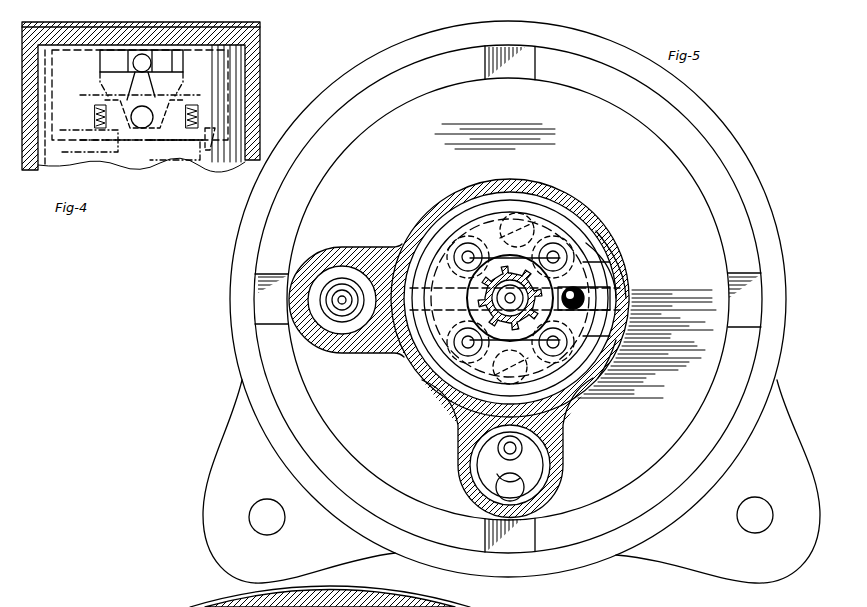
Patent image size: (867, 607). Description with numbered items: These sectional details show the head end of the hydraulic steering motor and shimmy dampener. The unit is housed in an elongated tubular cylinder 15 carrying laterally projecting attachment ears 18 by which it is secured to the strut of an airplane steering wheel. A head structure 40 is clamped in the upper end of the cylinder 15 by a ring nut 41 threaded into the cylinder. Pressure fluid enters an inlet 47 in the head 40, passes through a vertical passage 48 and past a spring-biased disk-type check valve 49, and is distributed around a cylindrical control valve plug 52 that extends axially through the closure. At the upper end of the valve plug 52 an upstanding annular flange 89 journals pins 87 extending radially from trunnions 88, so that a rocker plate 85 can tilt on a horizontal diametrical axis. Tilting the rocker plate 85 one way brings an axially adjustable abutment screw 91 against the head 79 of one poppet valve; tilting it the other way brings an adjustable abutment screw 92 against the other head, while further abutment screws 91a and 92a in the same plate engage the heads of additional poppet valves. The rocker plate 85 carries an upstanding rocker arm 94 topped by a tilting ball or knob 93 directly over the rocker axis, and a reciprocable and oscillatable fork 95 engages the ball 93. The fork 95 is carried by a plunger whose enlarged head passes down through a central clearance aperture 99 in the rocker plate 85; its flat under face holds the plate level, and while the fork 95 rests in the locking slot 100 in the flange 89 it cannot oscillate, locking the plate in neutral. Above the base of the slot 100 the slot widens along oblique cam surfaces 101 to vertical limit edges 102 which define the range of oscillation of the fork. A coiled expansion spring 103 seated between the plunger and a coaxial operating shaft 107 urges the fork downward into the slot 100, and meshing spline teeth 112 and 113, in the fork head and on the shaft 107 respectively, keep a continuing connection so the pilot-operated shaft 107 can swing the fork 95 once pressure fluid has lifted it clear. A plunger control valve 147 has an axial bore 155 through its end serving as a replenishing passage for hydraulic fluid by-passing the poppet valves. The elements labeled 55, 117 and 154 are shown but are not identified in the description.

In FIG. 5, the tubular cylinder 15 is at (247, 351).
In FIG. 5, the attachment ears 18 is at (210, 527).
In FIG. 4, the head structure 40 is at (256, 90).
In FIG. 5, the head structure 40 is at (606, 279).
In FIG. 5, the ring nut 41 is at (612, 520).
In FIG. 5, the inlet 47 is at (548, 471).
In FIG. 5, the vertical passage 48 is at (518, 494).
In FIG. 5, the check valve 49 is at (506, 491).
In FIG. 5, the control valve plug 52 is at (440, 334).
In FIG. 5, the hub ring 55 is at (470, 421).
In FIG. 4, the poppet valve heads 79 is at (200, 166).
In FIG. 5, the poppet valve heads 79 is at (580, 218).
In FIG. 4, the rocker plate 85 is at (80, 121).
In FIG. 5, the rocker plate 85 is at (444, 272).
In FIG. 4, the pins 87 is at (143, 121).
In FIG. 4, the trunnions 88 is at (160, 158).
In FIG. 5, the trunnions 88 is at (425, 241).
In FIG. 4, the annular flange 89 is at (50, 162).
In FIG. 5, the annular flange 89 is at (392, 361).
In FIG. 4, the abutment screw 91 is at (262, 110).
In FIG. 5, the abutment screw 91 is at (586, 241).
In FIG. 5, the abutment screw 91a is at (480, 240).
In FIG. 4, the abutment screw 92 is at (130, 147).
In FIG. 5, the abutment screw 92 is at (598, 379).
In FIG. 5, the abutment screw 92a is at (468, 374).
In FIG. 4, the tilting ball 93 is at (106, 56).
In FIG. 5, the tilting ball 93 is at (612, 299).
In FIG. 4, the rocker arm 94 is at (195, 76).
In FIG. 4, the fork 95 is at (134, 68).
In FIG. 5, the fork 95 is at (596, 231).
In FIG. 5, the clearance aperture 99 is at (467, 250).
In FIG. 4, the locking slot 100 is at (195, 76).
In FIG. 5, the locking slot 100 is at (626, 340).
In FIG. 4, the cam surfaces 101 is at (240, 46).
In FIG. 5, the cam surfaces 101 is at (592, 263).
In FIG. 4, the limit edges 102 is at (228, 54).
In FIG. 5, the expansion spring 103 is at (504, 256).
In FIG. 5, the operating shaft 107 is at (598, 291).
In FIG. 5, the spline teeth 112 is at (478, 316).
In FIG. 5, the spline teeth 113 is at (480, 299).
In FIG. 5, the pin 117 is at (504, 452).
In FIG. 5, the plunger control valve 147 is at (320, 338).
In FIG. 5, the side lobe 154 is at (340, 272).
In FIG. 5, the axial bore 155 is at (342, 312).